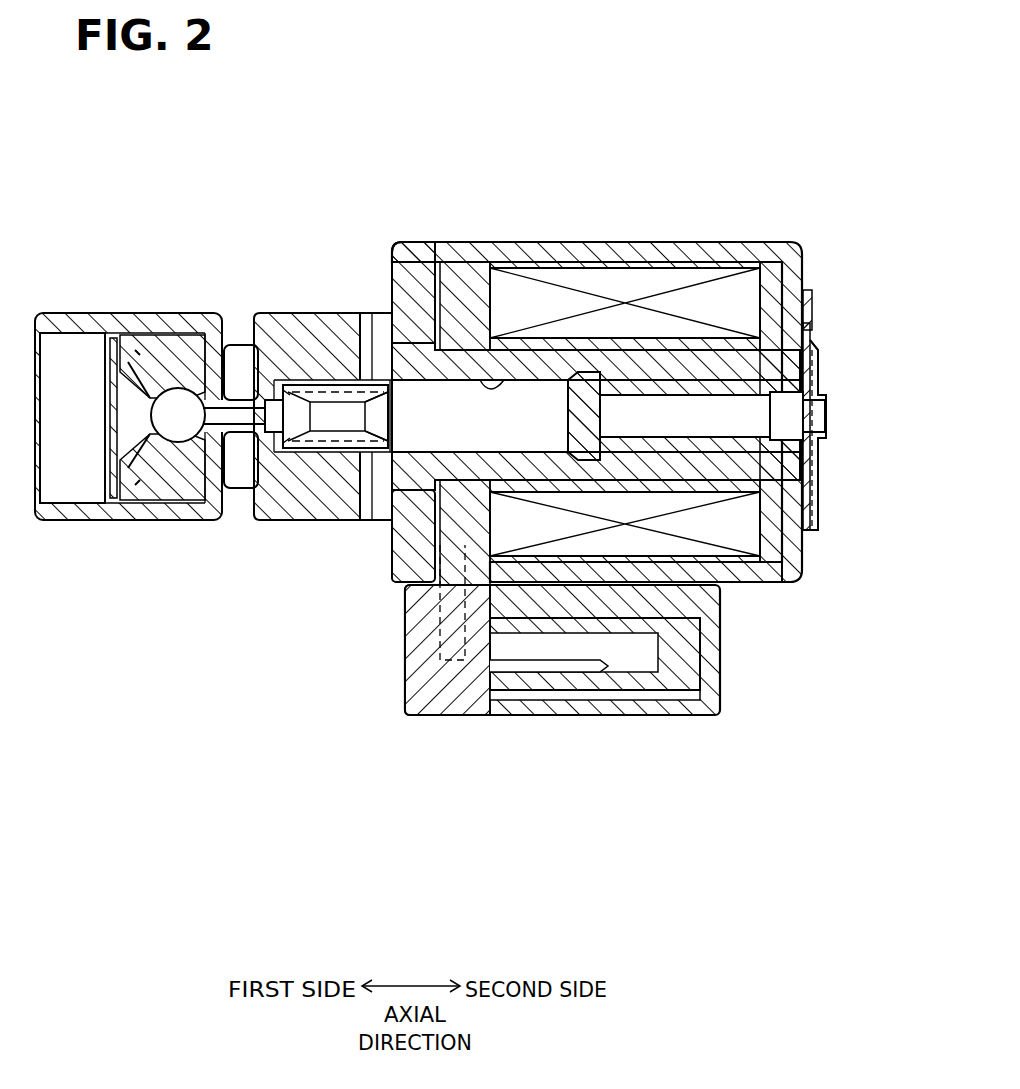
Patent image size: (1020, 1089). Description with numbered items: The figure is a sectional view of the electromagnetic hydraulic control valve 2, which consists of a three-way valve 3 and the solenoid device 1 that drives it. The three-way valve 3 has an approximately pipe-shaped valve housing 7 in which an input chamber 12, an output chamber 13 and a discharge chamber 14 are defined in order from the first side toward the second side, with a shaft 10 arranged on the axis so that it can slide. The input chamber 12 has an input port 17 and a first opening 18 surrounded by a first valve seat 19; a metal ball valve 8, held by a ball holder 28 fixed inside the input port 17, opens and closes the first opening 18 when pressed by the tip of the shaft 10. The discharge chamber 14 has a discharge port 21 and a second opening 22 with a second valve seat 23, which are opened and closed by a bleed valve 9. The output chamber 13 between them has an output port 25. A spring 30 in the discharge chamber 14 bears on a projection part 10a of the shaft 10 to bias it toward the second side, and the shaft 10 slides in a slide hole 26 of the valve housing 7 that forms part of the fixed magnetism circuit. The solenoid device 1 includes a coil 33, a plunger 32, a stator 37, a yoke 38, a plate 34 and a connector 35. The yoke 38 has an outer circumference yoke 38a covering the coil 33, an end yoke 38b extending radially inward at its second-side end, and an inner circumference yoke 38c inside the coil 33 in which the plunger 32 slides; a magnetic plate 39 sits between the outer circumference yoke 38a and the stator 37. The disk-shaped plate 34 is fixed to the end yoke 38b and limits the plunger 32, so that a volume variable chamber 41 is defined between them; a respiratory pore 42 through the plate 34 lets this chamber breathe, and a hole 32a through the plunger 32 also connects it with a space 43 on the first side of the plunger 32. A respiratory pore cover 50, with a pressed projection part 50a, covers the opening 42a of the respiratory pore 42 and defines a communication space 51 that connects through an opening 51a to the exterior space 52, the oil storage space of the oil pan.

The solenoid device 1 is at (792, 243).
The electromagnetic hydraulic control valve 2 is at (776, 708).
The three-way valve 3 is at (160, 311).
The valve housing 7 is at (190, 468).
The ball valve 8 is at (148, 478).
The bleed valve 9 is at (296, 450).
The shaft 10 is at (335, 432).
The projection part 10a is at (380, 436).
The input chamber 12 is at (126, 396).
The output chamber 13 is at (232, 343).
The discharge chamber 14 is at (336, 345).
The input port 17 is at (65, 363).
The first opening 18 is at (188, 352).
The first valve seat 19 is at (176, 432).
The discharge port 21 is at (373, 345).
The second opening 22 is at (318, 382).
The second valve seat 23 is at (300, 382).
The output port 25 is at (236, 488).
The slide hole 26 is at (468, 384).
The ball holder 28 is at (130, 480).
The spring 30 is at (276, 450).
The plunger 32 is at (660, 372).
The hole 32a is at (724, 428).
The coil 33 is at (612, 290).
The plate 34 is at (822, 455).
The connector 35 is at (572, 716).
The stator 37 is at (462, 332).
The yoke 38 is at (760, 586).
The outer circumference yoke 38a is at (690, 254).
The end yoke 38b is at (795, 280).
The inner circumference yoke 38c is at (745, 330).
The magnetic plate 39 is at (414, 300).
The volume variable chamber 41 is at (790, 585).
The respiratory pore 42 is at (804, 410).
The opening 42a is at (818, 424).
The space 43 is at (583, 368).
The respiratory pore cover 50 is at (826, 498).
The projection part 50a is at (815, 362).
The communication space 51 is at (810, 345).
The opening 51a is at (810, 535).
The exterior space 52 is at (854, 648).